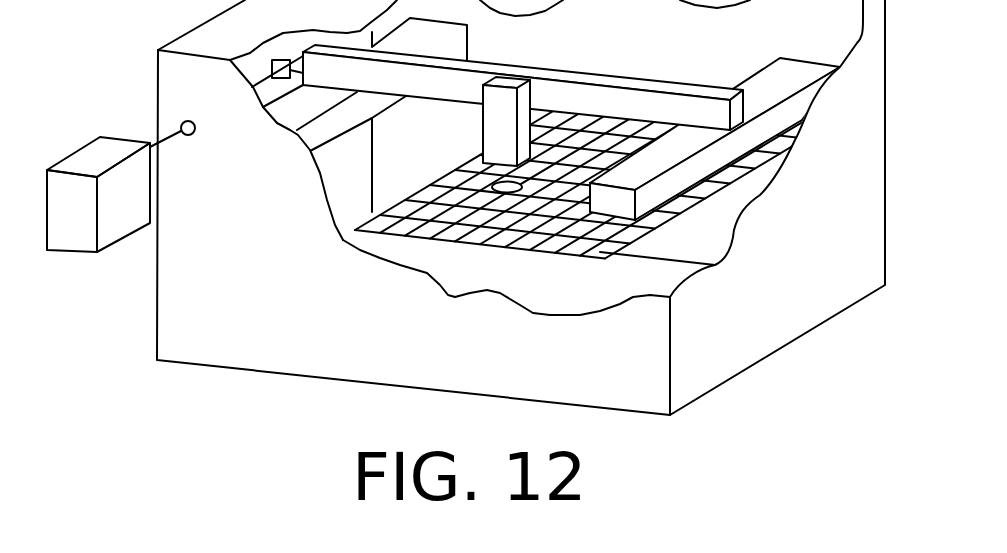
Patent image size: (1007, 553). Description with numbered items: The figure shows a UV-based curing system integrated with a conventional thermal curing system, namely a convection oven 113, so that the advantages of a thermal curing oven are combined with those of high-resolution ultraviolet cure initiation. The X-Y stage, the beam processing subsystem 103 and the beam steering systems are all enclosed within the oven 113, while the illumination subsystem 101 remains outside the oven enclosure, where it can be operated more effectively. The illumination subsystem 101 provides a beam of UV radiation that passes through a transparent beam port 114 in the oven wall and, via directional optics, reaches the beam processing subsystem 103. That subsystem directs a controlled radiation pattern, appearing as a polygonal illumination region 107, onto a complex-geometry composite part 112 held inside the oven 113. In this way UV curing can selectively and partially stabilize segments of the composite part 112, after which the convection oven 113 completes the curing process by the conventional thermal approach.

The illumination subsystem 101 is at (113, 228).
The beam processing subsystem 103 is at (508, 80).
The polygonal illumination region 107 is at (500, 195).
The complex-geometry composite part 112 is at (448, 176).
The convection oven 113 is at (521, 207).
The transparent beam port 114 is at (196, 131).